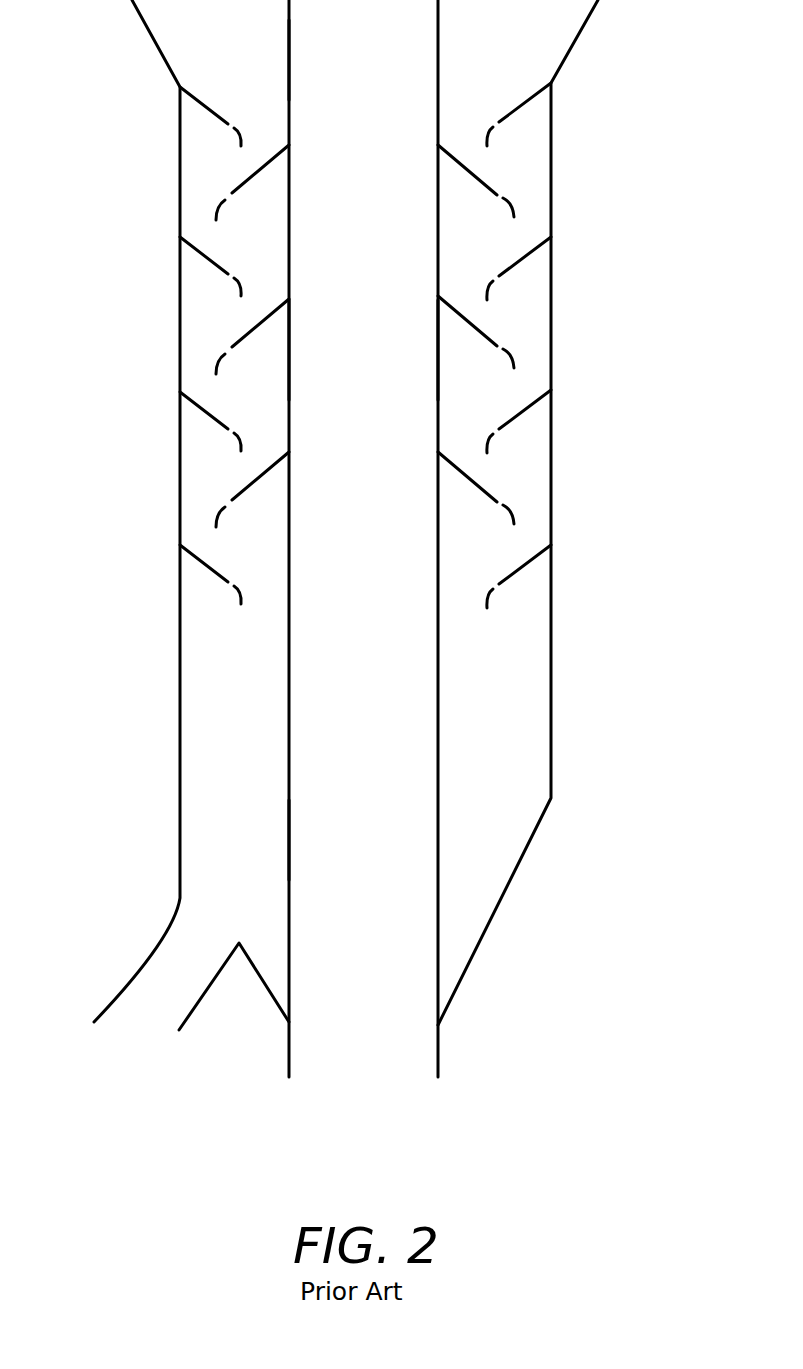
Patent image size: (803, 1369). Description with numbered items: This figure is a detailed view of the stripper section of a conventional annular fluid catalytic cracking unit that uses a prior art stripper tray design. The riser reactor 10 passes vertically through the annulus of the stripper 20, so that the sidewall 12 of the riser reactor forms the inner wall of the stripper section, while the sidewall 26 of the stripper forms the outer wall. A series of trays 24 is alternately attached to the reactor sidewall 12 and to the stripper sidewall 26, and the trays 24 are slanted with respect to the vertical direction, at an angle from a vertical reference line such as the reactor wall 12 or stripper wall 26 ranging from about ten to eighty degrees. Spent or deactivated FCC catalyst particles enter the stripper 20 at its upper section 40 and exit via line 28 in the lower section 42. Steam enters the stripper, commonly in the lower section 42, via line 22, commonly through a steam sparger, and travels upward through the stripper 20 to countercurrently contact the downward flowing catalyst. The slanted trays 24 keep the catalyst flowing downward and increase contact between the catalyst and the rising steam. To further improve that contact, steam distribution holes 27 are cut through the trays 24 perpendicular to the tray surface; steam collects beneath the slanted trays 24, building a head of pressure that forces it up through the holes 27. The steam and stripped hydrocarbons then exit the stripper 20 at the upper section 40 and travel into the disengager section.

The riser reactor 10 is at (385, 180).
The sidewall of the riser reactor 12 is at (438, 267).
The stripper 20 is at (370, 538).
The line 22 is at (319, 512).
The tray 24 is at (487, 182).
The sidewall of the stripper 26 is at (179, 182).
The steam distribution holes 27 is at (503, 348).
The line 28 is at (196, 997).
The upper section 40 is at (255, 70).
The lower section 42 is at (252, 849).